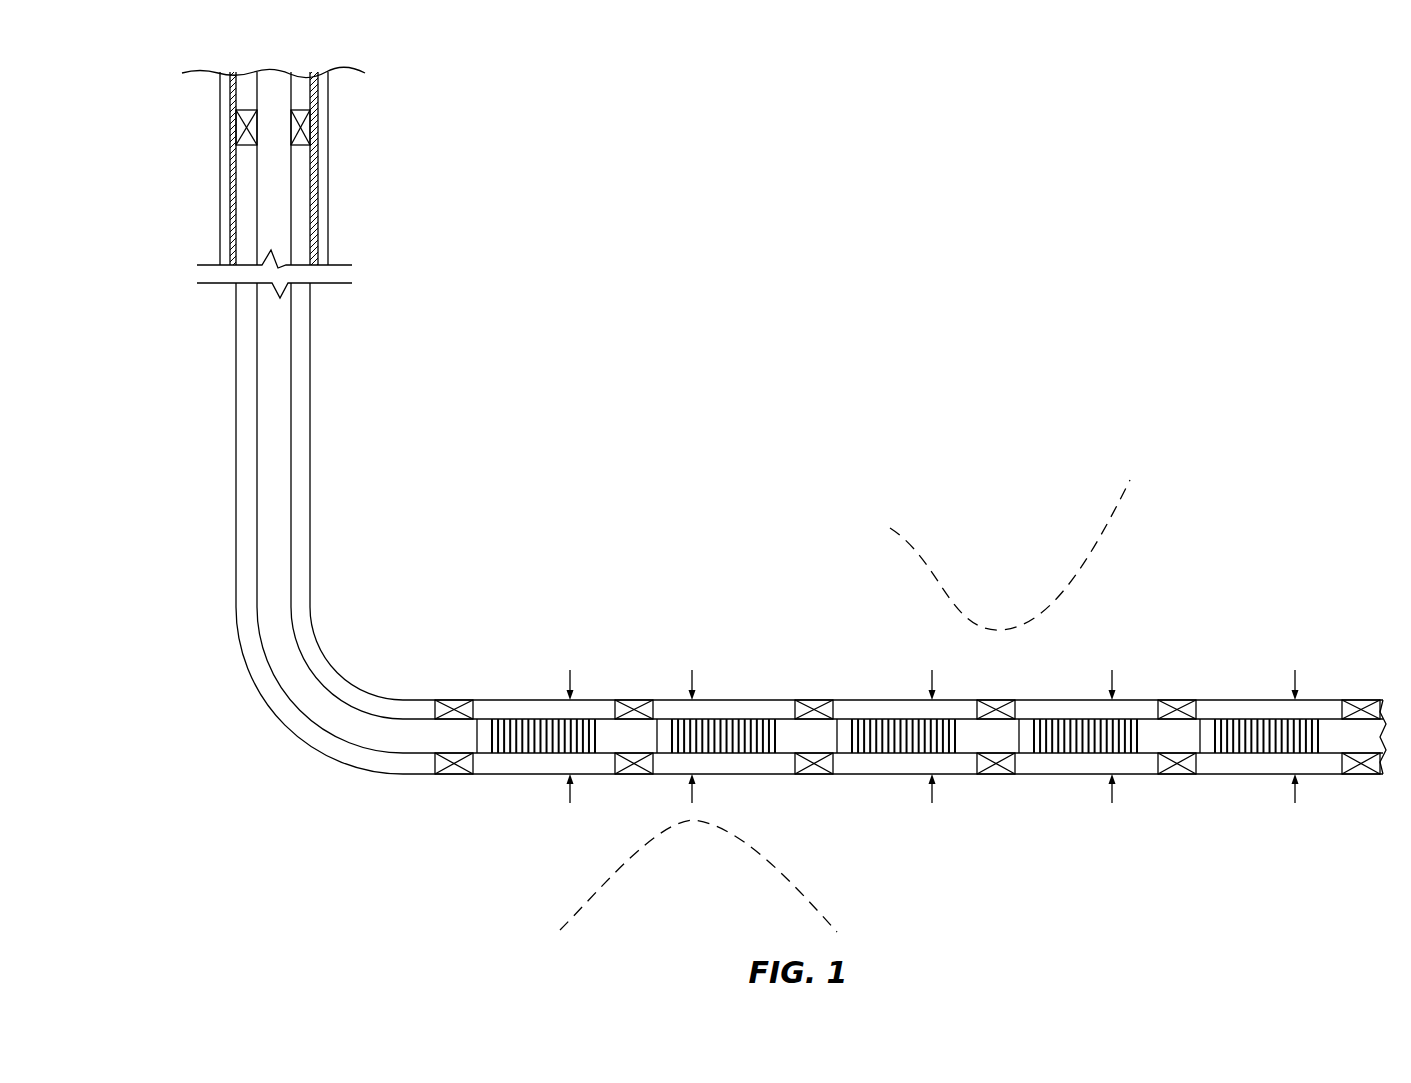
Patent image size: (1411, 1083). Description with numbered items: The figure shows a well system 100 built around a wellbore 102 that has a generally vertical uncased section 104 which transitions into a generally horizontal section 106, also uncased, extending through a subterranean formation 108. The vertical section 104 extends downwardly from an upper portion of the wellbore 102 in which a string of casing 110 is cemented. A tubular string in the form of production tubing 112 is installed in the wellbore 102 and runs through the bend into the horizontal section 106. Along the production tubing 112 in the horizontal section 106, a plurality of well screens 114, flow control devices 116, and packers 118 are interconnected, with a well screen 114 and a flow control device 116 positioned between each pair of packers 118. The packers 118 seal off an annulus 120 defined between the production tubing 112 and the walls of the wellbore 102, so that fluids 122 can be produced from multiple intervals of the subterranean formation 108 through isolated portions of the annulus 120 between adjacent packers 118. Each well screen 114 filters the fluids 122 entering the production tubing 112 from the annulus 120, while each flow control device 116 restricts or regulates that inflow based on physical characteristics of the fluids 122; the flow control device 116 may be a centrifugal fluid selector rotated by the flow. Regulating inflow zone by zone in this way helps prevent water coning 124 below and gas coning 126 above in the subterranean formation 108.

The well system 100 is at (556, 285).
The wellbore 102 is at (310, 430).
The vertical section 104 is at (303, 376).
The horizontal section 106 is at (753, 699).
The subterranean formation 108 is at (762, 582).
The string of casing 110 is at (317, 177).
The production tubing 112 is at (300, 486).
The well screen 114 is at (535, 703).
The flow control device 116 is at (482, 705).
The packer 118 is at (452, 775).
The annulus 120 is at (880, 774).
The fluids 122 is at (570, 670).
The water coning 124 is at (590, 902).
The gas coning 126 is at (1120, 512).